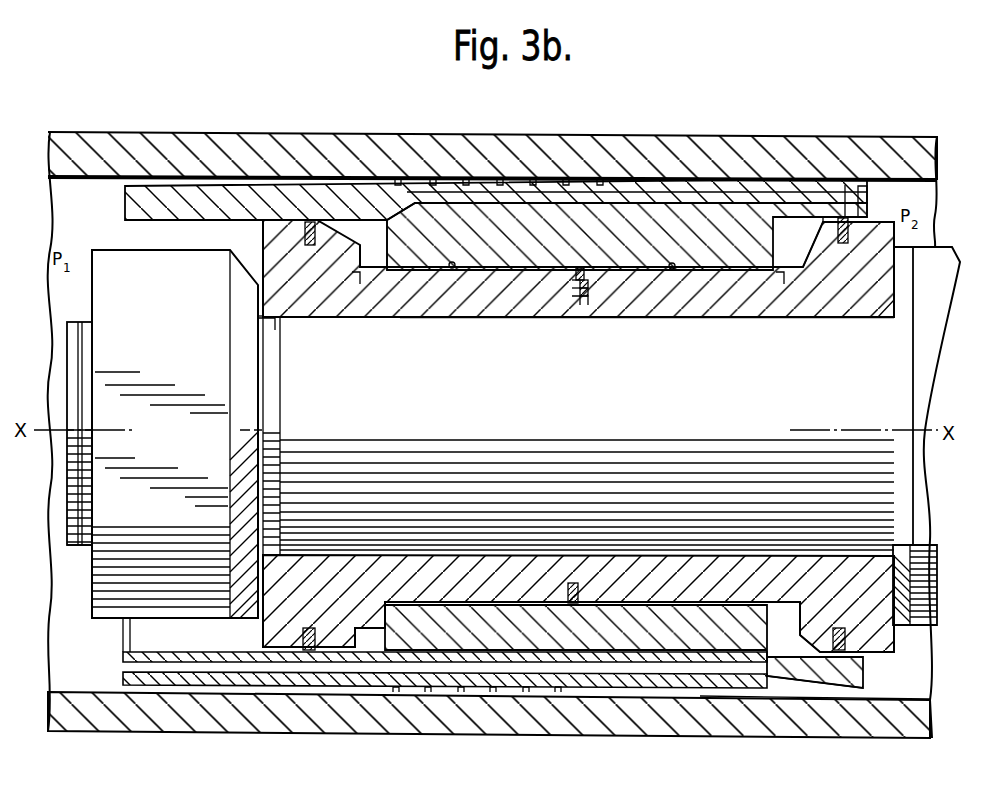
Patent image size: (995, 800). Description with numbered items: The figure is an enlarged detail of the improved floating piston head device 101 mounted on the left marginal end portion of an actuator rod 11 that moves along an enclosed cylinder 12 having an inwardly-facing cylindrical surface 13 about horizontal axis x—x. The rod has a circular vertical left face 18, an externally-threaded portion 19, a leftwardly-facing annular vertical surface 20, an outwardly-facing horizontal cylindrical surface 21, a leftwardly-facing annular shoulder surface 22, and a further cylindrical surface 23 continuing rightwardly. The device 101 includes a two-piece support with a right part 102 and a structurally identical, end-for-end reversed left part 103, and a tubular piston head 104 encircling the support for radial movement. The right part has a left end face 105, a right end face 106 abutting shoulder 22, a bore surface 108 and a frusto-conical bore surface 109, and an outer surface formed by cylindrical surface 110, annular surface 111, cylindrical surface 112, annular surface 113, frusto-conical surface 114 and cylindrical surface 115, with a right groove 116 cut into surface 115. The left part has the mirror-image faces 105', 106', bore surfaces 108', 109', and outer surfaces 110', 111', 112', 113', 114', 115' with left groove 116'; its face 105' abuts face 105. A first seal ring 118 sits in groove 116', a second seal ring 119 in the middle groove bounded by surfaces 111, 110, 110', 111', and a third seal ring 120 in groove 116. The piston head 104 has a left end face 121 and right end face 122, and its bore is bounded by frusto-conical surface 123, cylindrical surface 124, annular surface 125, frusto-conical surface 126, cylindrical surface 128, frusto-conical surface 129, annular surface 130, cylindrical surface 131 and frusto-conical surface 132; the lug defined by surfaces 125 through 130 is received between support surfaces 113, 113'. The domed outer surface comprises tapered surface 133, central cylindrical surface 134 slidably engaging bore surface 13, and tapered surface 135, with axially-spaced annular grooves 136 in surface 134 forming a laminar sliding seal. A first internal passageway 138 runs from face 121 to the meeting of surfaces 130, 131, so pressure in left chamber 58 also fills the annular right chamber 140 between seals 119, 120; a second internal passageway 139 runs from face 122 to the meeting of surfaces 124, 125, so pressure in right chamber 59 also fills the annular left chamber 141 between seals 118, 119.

The actuator rod 11 is at (950, 236).
The enclosed cylinder 12 is at (158, 128).
The inwardly-facing cylindrical surface 13 is at (70, 182).
The circular vertical left face 18 is at (67, 484).
The externally-threaded portion 19 is at (70, 560).
The leftwardly-facing annular vertical surface 20 is at (275, 330).
The outwardly-facing horizontal cylindrical surface 21 is at (470, 562).
The leftwardly-facing annular vertical shoulder surface 22 is at (893, 288).
The outwardly-facing horizontal cylindrical surface 23 is at (920, 626).
The left chamber 58 is at (88, 226).
The right chamber 59 is at (922, 200).
The improved device 101 is at (662, 166).
The support right part 102 is at (705, 322).
The support left part 103 is at (390, 322).
The tubular piston head 104 is at (508, 168).
The annular vertical left end face 105 is at (548, 330).
The annular vertical right end face 105' is at (607, 330).
The annular vertical right end face 106 is at (923, 423).
The annular vertical left end face 106' is at (175, 434).
The inwardly-facing horizontal cylindrical surface 108 is at (797, 334).
The inwardly-facing horizontal cylindrical surface 108' is at (500, 337).
The frusto-conical surface 109 is at (872, 324).
The frusto-conical surface 109' is at (212, 323).
The outwardly-facing horizontal cylindrical surface 110 is at (614, 302).
The outwardly-facing horizontal cylindrical surface 110' is at (548, 302).
The leftwardly-facing annular vertical surface 111 is at (617, 288).
The annular vertical surface 111' is at (545, 289).
The outwardly-facing horizontal cylindrical surface 112 is at (692, 284).
The outwardly-facing horizontal cylindrical surface 112' is at (458, 283).
The leftwardly-facing annular vertical surface 113 is at (762, 289).
The annular vertical surface 113' is at (378, 288).
The frusto-conical surface 114 is at (761, 226).
The frusto-conical surface 114' is at (379, 245).
The outwardly-facing horizontal cylindrical surface 115 is at (875, 158).
The outwardly-facing horizontal cylindrical surface 115' is at (254, 233).
The right groove 116 is at (859, 246).
The left groove 116' is at (288, 269).
The first seal ring 118 is at (310, 220).
The second seal ring 119 is at (582, 268).
The third seal ring 120 is at (843, 184).
The annular vertical left end face 121 is at (123, 678).
The annular vertical right end face 122 is at (863, 688).
The frusto-conical surface 123 is at (123, 655).
The inwardly-facing horizontal cylindrical surface 124 is at (178, 652).
The leftwardly-facing annular vertical surface 125 is at (386, 643).
The frusto-conical surface 126 is at (386, 600).
The inwardly-facing horizontal cylindrical surface 128 is at (442, 605).
The frusto-conical surface 129 is at (768, 605).
The rightwardly-facing annular vertical surface 130 is at (767, 626).
The inwardly-facing horizontal cylindrical surface 131 is at (818, 652).
The frusto-conical surface 132 is at (863, 658).
The frusto-conical surface 133 is at (190, 700).
The central outwardly-facing horizontal cylindrical surface 134 is at (443, 694).
The frusto-conical surface 135 is at (765, 700).
The annular grooves 136 is at (530, 693).
The first internal passageway 138 is at (512, 666).
The second internal passageway 139 is at (505, 193).
The annular right chamber 140 is at (798, 654).
The annular left chamber 141 is at (385, 625).